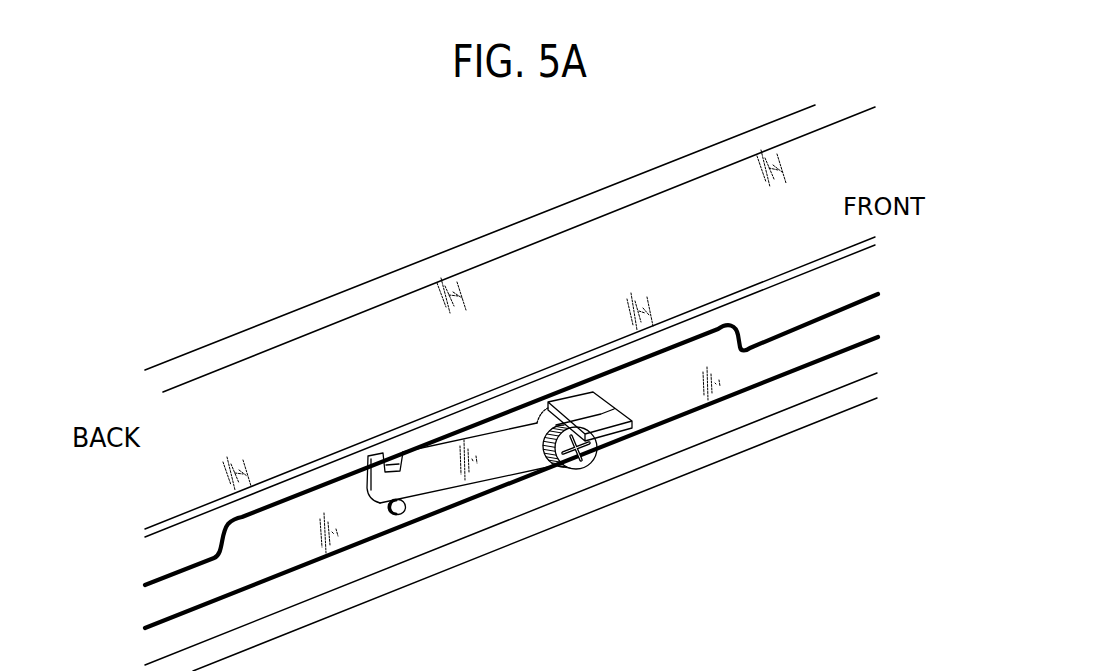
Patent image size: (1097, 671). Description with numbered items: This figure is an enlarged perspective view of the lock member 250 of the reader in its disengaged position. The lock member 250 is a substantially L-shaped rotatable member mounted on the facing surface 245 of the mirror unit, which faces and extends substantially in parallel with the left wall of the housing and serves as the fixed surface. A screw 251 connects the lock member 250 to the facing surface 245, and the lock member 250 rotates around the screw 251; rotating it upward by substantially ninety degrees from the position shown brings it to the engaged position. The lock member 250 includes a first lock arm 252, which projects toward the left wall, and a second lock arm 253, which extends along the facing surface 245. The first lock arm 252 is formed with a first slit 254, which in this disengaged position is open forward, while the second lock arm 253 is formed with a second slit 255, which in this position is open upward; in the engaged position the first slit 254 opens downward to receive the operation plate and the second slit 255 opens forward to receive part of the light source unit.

The facing surface 245 is at (617, 406).
The lock member 250 is at (568, 533).
The screw 251 is at (568, 462).
The first lock arm 252 is at (618, 408).
The second lock arm 253 is at (445, 513).
The first slit 254 is at (732, 368).
The second slit 255 is at (394, 460).